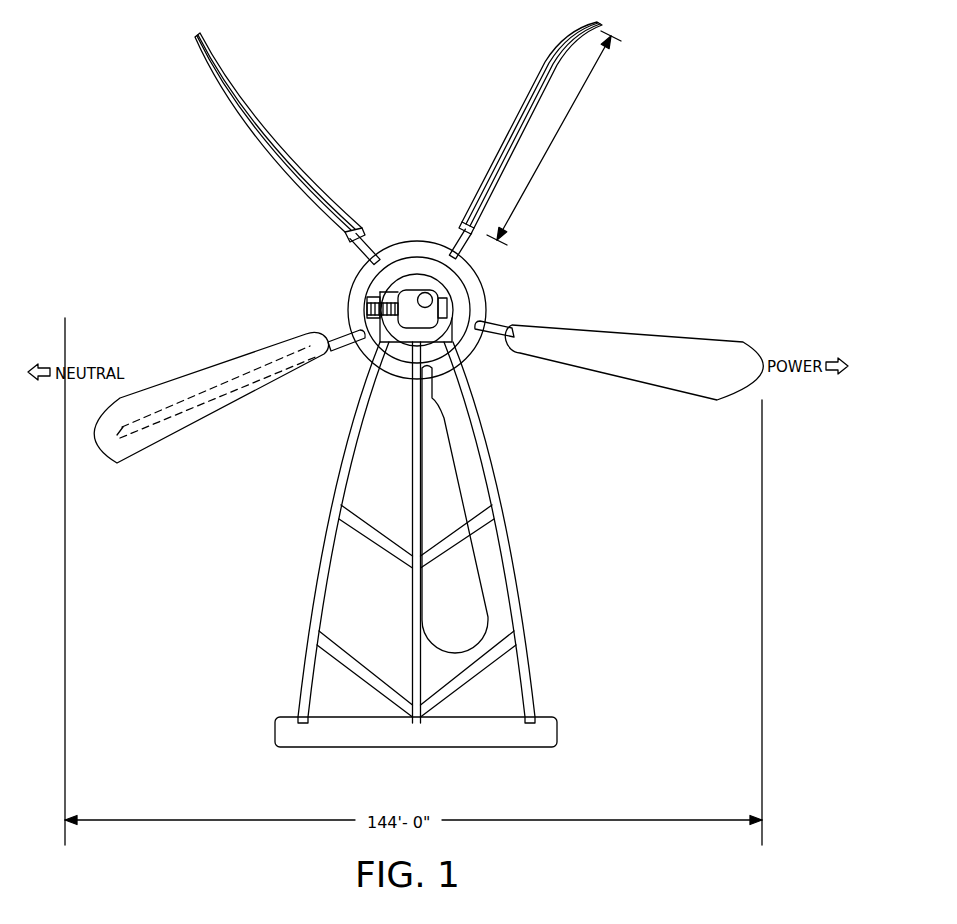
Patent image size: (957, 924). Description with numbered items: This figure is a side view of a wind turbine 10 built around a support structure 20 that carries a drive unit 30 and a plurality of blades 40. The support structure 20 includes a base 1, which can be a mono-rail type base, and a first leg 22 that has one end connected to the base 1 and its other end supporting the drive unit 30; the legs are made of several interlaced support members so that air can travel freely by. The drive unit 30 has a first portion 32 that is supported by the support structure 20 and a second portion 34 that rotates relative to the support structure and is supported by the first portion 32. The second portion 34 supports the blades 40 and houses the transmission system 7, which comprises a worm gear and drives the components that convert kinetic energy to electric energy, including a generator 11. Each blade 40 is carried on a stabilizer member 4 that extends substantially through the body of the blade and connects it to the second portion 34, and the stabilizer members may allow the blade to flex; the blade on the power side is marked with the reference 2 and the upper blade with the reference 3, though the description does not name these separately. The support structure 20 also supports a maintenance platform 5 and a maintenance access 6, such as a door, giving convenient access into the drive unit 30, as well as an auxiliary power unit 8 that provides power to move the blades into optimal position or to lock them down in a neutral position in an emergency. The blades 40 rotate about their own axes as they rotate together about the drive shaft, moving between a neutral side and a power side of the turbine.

The base 1 is at (545, 721).
The power blade 2 is at (645, 358).
The upper blade 3 is at (287, 132).
The stabilizer member 4 is at (172, 420).
The maintenance platform 5 is at (377, 332).
The maintenance access 6 is at (372, 296).
The transmission system 7 is at (398, 246).
The auxiliary power unit 8 is at (447, 312).
The wind turbine 10 is at (608, 208).
The generator 11 is at (425, 300).
The support structure 20 is at (436, 532).
The first leg 22 is at (500, 472).
The drive unit 30 is at (413, 266).
The first portion 32 is at (480, 333).
The second portion 34 is at (376, 284).
The blade 40 is at (293, 137).